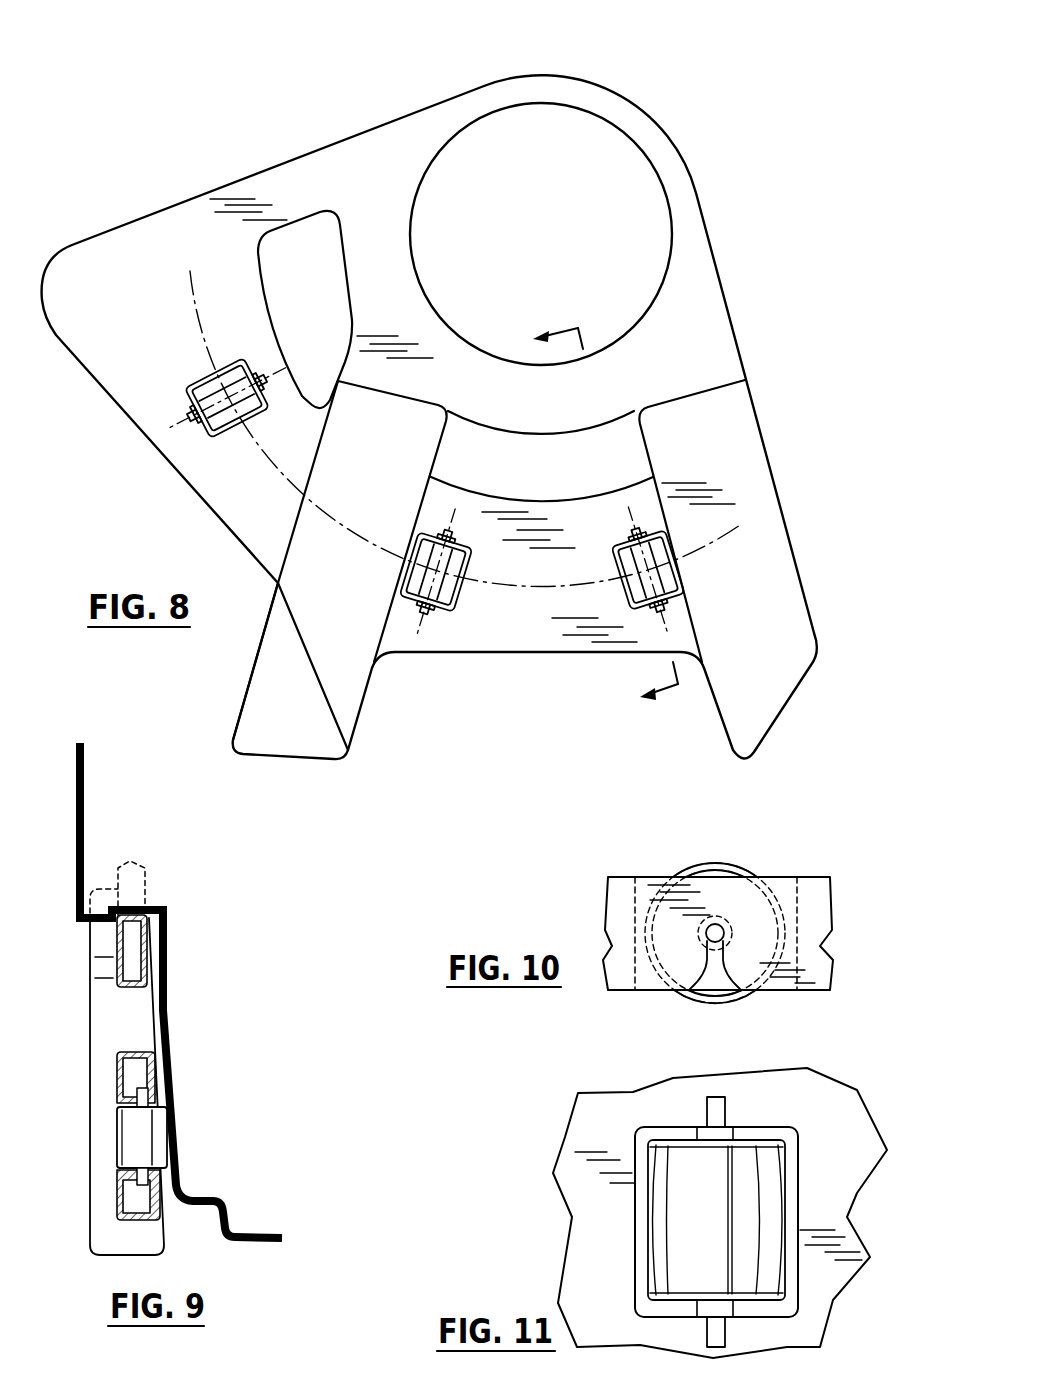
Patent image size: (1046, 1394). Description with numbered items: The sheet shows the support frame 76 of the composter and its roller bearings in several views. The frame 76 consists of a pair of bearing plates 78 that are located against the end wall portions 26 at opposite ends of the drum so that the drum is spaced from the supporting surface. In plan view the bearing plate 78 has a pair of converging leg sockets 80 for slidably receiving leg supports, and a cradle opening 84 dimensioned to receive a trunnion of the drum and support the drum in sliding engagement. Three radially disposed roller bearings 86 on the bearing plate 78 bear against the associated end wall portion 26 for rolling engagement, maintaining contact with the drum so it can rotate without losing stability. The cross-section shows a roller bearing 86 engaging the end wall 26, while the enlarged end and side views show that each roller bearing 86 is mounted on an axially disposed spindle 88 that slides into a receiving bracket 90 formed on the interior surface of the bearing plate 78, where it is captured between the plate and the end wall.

In FIG. 9, the end wall portion 26 is at (168, 1023).
In FIG. 8, the frame 76 is at (387, 62).
In FIG. 8, the bearing plate 78 is at (297, 150).
In FIG. 9, the bearing plate 78 is at (90, 1033).
In FIG. 10, the bearing plate 78 is at (790, 881).
In FIG. 11, the bearing plate 78 is at (720, 1197).
In FIG. 8, the leg socket 80 is at (350, 722).
In FIG. 8, the cradle opening 84 is at (411, 232).
In FIG. 8, the roller bearing 86 is at (197, 380).
In FIG. 9, the roller bearing 86 is at (122, 1136).
In FIG. 10, the roller bearing 86 is at (748, 863).
In FIG. 11, the roller bearing 86 is at (781, 1186).
In FIG. 10, the spindle 88 is at (722, 921).
In FIG. 11, the spindle 88 is at (730, 1113).
In FIG. 10, the receiving bracket 90 is at (711, 972).